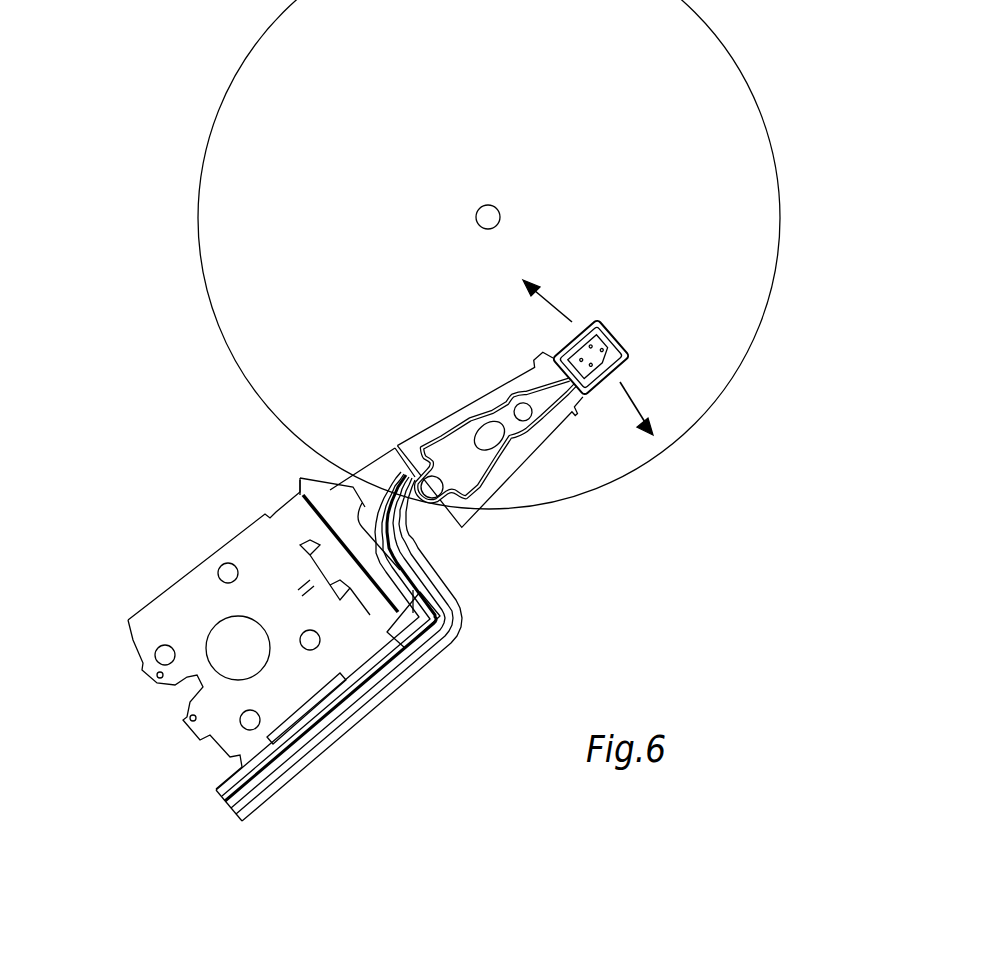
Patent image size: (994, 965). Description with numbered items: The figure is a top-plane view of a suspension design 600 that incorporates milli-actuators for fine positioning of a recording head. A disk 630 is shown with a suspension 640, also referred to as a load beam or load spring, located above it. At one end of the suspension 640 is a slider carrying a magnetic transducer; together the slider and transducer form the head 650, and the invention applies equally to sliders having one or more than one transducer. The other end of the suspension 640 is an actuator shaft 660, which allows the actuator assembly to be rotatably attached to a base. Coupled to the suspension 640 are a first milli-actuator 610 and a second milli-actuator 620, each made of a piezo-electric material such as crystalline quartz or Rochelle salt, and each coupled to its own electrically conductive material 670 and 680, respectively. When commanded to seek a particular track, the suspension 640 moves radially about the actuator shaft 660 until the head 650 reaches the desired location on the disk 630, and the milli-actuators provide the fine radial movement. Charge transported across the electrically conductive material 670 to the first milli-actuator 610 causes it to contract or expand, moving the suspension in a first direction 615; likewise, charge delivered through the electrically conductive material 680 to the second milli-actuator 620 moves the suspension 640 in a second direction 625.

The suspension design 600 is at (136, 70).
The first milli-actuator 610 is at (420, 512).
The first direction 615 is at (555, 303).
The second milli-actuator 620 is at (378, 467).
The second direction 625 is at (633, 406).
The disk 630 is at (751, 86).
The suspension 640 is at (545, 431).
The head 650 is at (613, 340).
The actuator shaft 660 is at (188, 572).
The electrically conductive material 670 is at (420, 532).
The electrically conductive material 680 is at (380, 490).